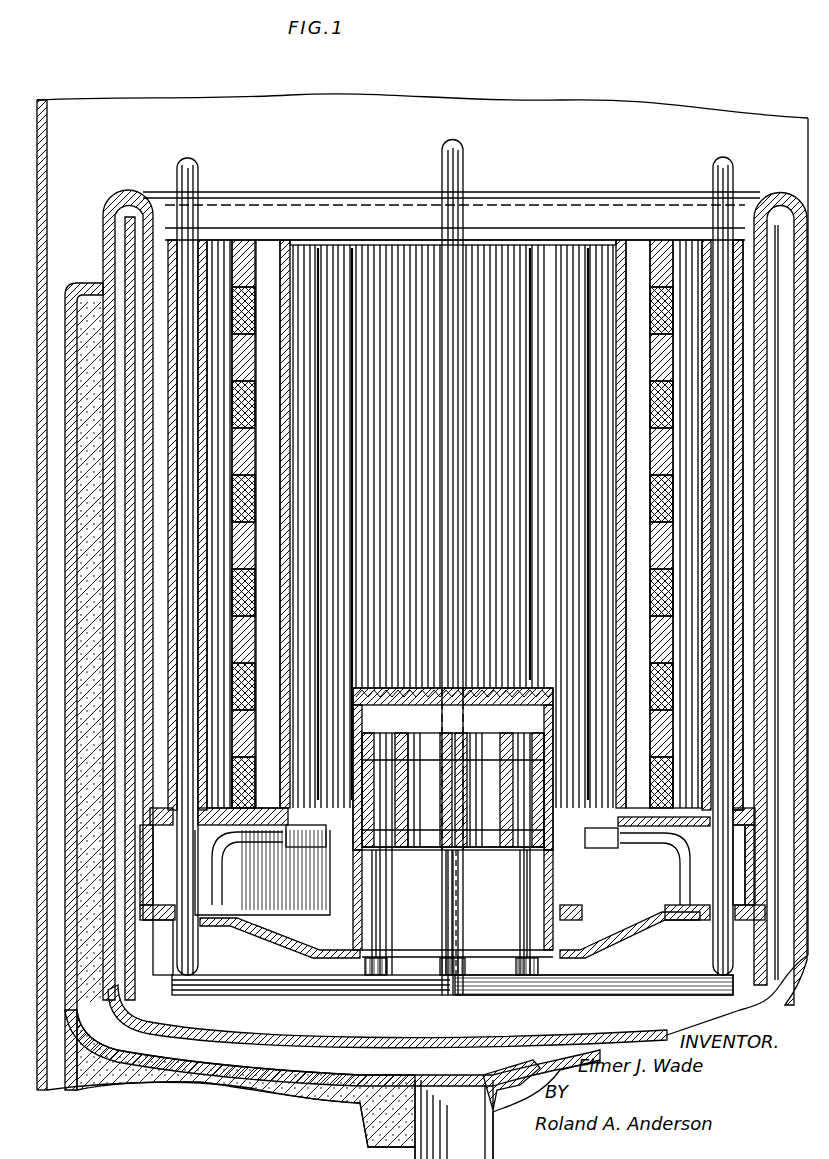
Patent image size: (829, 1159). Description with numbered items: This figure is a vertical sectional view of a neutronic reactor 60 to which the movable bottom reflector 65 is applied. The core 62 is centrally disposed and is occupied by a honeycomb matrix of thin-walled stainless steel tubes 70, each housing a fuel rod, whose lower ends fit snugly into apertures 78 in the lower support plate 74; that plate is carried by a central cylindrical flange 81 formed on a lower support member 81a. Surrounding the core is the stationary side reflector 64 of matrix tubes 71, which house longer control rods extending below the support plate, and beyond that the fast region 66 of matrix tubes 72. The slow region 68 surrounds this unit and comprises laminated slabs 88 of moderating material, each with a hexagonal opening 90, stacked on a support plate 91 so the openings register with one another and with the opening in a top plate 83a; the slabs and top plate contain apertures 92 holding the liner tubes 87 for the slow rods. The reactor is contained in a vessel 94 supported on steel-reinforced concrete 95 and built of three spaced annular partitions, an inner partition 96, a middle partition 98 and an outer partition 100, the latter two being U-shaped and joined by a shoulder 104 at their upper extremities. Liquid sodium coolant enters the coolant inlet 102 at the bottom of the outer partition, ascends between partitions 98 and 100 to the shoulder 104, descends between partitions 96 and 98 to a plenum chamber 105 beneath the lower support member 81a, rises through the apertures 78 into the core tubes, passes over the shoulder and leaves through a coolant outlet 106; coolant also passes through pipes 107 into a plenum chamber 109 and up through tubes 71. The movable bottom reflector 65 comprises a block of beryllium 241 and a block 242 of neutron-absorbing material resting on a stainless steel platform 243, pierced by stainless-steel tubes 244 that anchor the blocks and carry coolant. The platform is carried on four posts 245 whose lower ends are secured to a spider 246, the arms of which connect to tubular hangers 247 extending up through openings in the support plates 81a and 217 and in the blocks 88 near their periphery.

The neutronic reactor 60 is at (588, 131).
The core 62 is at (495, 230).
The stationary side reflector 64 is at (580, 228).
The movable bottom reflector 65 is at (466, 870).
The fast region 66 is at (606, 227).
The slow region 68 is at (454, 505).
The matrix tubes 70 is at (503, 245).
The matrix tubes 71 is at (532, 248).
The matrix tubes 72 is at (588, 248).
The lower support plate 74 is at (435, 712).
The apertures 78 is at (478, 712).
The central cylindrical flange 81 is at (378, 918).
The lower support member 81a is at (312, 952).
The top plate 83a is at (655, 250).
The liner tubes 87 is at (262, 240).
The laminated slabs 88 is at (240, 255).
The hexagonal opening 90 is at (617, 255).
The support plate 91 is at (700, 825).
The apertures 92 is at (195, 232).
The vessel 94 is at (768, 265).
The steel-reinforced concrete 95 is at (268, 1097).
The inner partition 96 is at (152, 232).
The partition 98 is at (125, 238).
The outer partition 100 is at (90, 282).
The coolant inlet 102 is at (485, 1138).
The shoulder 104 is at (128, 190).
The plenum chamber 105 is at (345, 1022).
The coolant outlet 106 is at (96, 310).
The pipes 107 is at (272, 862).
The plenum chamber 109 is at (600, 848).
The support plate 217 is at (274, 845).
The block of beryllium 241 is at (368, 745).
The block of neutron-absorbing material 242 is at (496, 745).
The platform 243 is at (396, 850).
The stainless-steel tubes 244 is at (488, 843).
The posts 245 is at (476, 940).
The spider 246 is at (580, 993).
The tubular hangers 247 is at (455, 142).